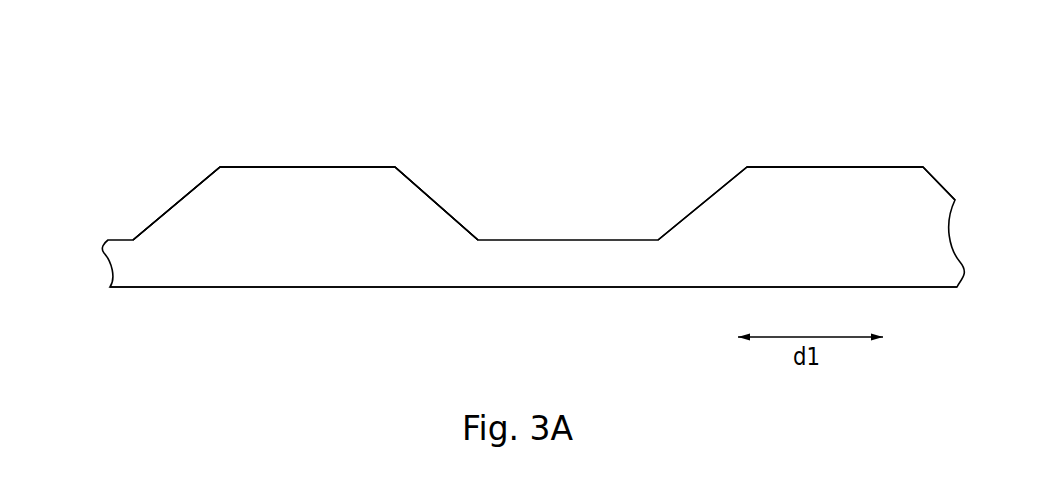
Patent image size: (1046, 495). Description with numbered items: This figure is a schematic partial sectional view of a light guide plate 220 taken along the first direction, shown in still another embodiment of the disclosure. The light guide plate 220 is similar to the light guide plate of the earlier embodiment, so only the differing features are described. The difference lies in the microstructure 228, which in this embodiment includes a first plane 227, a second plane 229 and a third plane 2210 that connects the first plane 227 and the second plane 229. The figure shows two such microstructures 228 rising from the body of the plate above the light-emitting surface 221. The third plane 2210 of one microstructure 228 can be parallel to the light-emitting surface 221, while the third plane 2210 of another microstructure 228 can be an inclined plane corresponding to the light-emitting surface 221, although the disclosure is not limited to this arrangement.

The light guide plate 220 is at (85, 53).
The light-emitting surface 221 is at (275, 287).
The first plane 227 is at (150, 220).
The microstructure 228 is at (183, 207).
The second plane 229 is at (447, 210).
The third plane 2210 is at (275, 167).